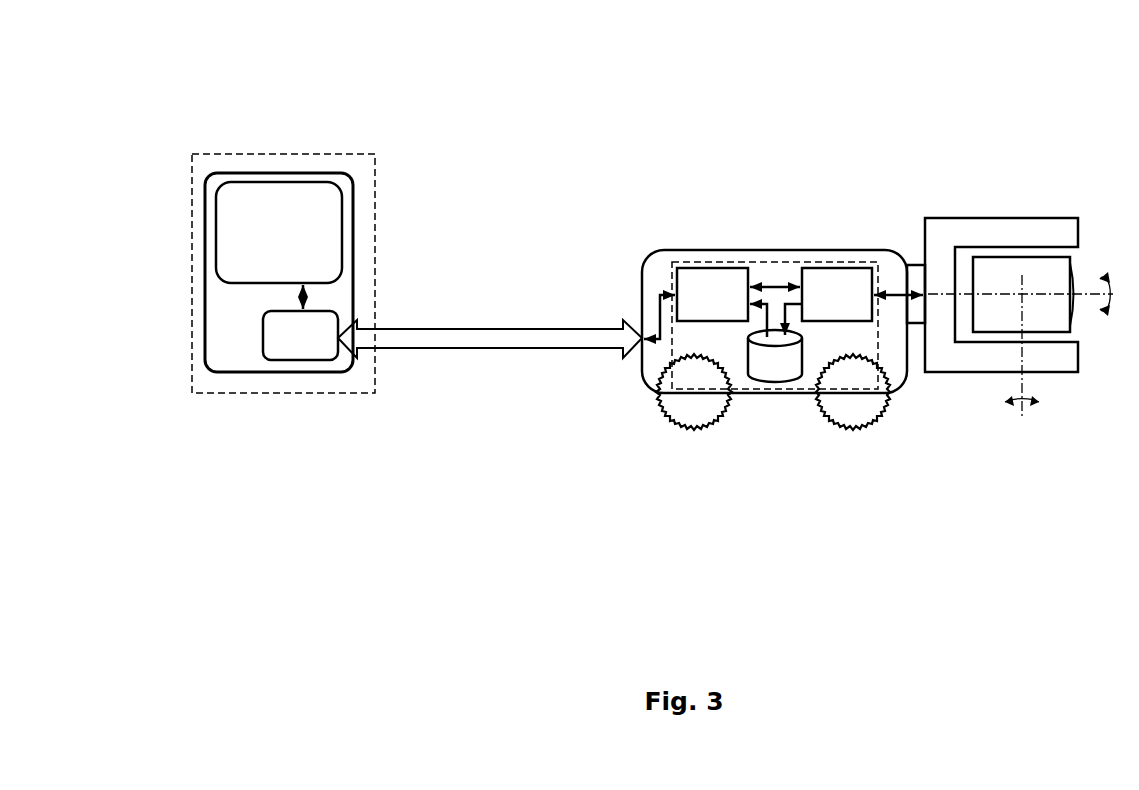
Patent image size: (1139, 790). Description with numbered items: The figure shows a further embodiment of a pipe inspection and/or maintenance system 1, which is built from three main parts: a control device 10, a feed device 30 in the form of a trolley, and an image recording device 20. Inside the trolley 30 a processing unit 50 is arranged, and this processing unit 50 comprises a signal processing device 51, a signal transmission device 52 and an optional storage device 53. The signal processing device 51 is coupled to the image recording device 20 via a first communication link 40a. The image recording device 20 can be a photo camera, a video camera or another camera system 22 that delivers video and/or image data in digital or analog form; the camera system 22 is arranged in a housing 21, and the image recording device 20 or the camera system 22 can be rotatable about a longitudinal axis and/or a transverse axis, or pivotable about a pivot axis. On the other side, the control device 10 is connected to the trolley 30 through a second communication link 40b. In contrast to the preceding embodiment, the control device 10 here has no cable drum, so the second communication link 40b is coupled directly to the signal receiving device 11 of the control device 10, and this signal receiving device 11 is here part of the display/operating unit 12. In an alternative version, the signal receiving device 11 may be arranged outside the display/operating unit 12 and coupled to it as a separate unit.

The pipe inspection and/or maintenance system 1 is at (727, 45).
The control device 10 is at (377, 196).
The signal receiving device 11 is at (303, 357).
The display/operating unit 12 is at (335, 192).
The image recording device 20 is at (963, 193).
The housing 21 is at (1008, 222).
The camera system 22 is at (1060, 255).
The feed device 30 is at (677, 232).
The first communication link 40a is at (897, 298).
The second communication link 40b is at (493, 337).
The processing unit 50 is at (775, 262).
The signal processing device 51 is at (845, 273).
The signal transmission device 52 is at (718, 273).
The storage device 53 is at (783, 375).